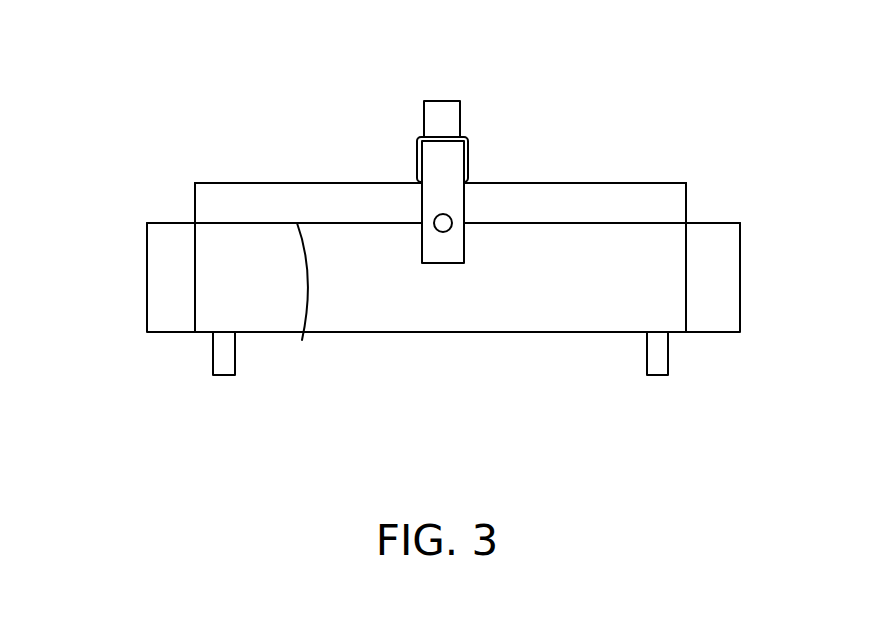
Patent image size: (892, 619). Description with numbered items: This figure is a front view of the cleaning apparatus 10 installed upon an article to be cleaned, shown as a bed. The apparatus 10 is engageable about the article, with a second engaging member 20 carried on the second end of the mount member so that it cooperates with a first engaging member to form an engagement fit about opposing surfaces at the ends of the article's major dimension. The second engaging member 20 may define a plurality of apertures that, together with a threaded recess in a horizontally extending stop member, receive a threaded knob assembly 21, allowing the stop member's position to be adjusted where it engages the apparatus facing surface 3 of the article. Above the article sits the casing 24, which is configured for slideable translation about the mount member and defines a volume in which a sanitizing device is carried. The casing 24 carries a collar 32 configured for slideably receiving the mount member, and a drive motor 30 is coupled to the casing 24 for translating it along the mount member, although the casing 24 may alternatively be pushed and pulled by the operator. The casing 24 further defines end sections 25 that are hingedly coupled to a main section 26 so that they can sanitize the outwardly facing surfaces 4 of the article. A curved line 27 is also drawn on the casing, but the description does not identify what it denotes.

The cleaning apparatus 10 is at (131, 190).
The casing 24 is at (243, 125).
The main section 26 is at (362, 205).
The apparatus facing surface 3 is at (222, 222).
The slot 27 is at (300, 337).
The end sections 25 is at (163, 270).
The outwardly facing surfaces 4 is at (197, 301).
The drive motor 30 is at (440, 98).
The collar 32 is at (455, 140).
The second engaging member 20 is at (447, 163).
The threaded knob assembly 21 is at (452, 227).